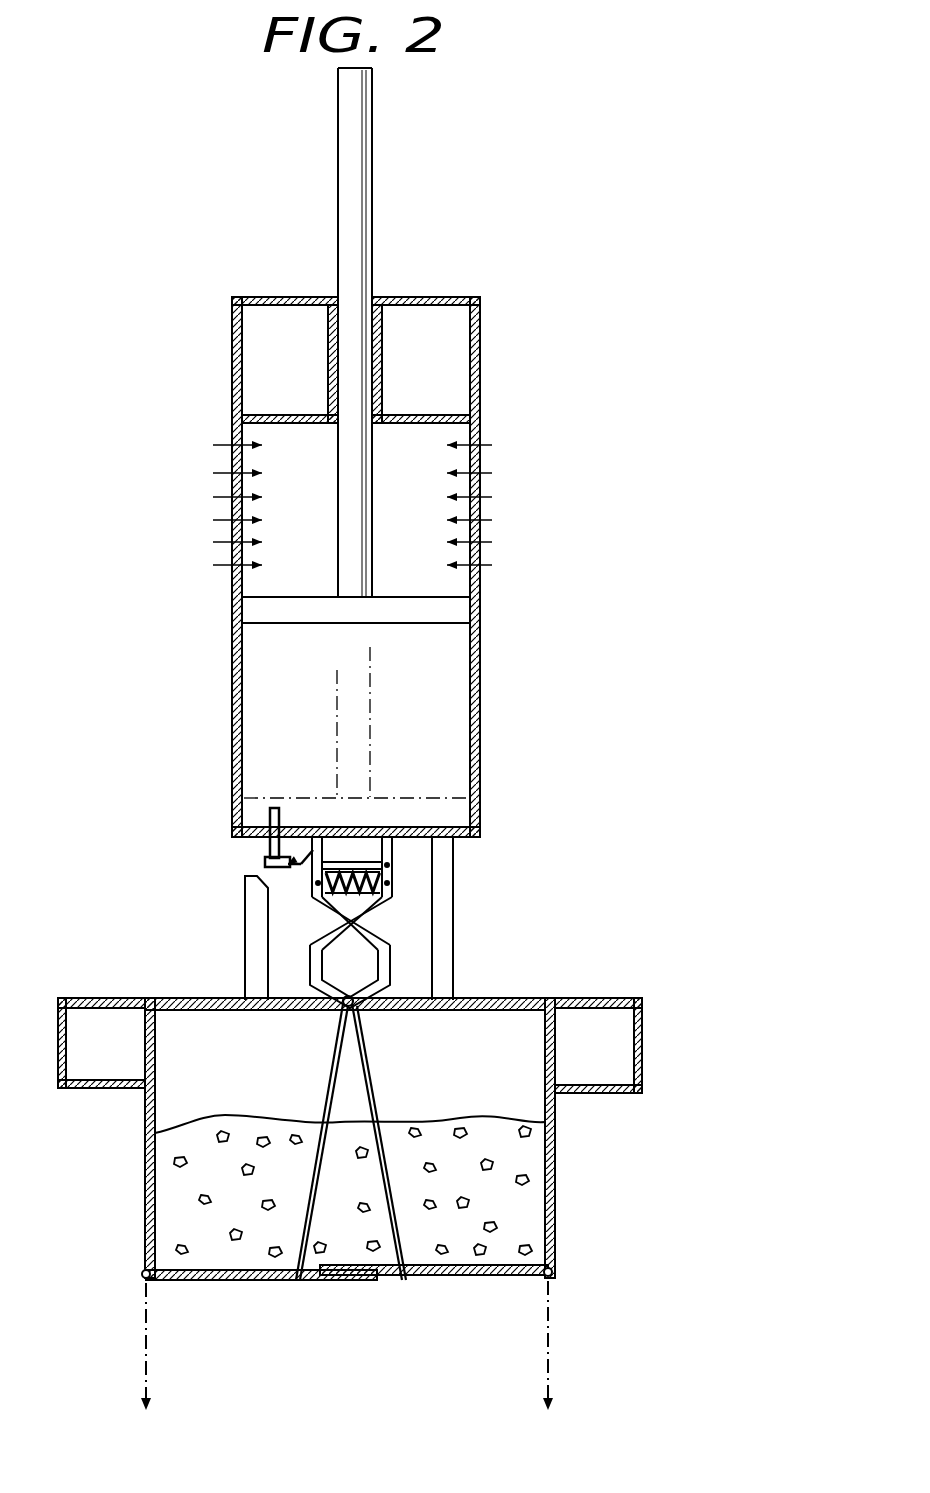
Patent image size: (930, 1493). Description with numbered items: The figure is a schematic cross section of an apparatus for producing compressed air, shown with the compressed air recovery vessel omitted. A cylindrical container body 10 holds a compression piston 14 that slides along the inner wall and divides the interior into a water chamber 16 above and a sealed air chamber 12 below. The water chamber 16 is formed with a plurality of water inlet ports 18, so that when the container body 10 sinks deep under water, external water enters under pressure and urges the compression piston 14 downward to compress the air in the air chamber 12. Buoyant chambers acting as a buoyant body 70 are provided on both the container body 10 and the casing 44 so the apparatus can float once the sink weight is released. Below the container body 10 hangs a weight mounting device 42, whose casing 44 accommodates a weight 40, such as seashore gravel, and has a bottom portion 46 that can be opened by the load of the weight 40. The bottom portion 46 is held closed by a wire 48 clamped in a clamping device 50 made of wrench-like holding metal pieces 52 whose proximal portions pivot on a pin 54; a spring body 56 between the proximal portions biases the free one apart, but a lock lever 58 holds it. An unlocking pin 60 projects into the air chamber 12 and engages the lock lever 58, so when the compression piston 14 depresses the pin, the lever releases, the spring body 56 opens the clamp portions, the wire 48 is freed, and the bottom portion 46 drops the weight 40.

The container body 10 is at (441, 298).
The buoyant body 70 is at (256, 343).
The water inlet ports 18 is at (234, 483).
The water chamber 16 is at (412, 531).
The compression piston 14 is at (283, 625).
The air chamber 12 is at (422, 731).
The unlocking pin 60 is at (296, 820).
The lock lever 58 is at (284, 876).
The clamping device 50 is at (398, 876).
The pin 54 is at (345, 928).
The spring body 56 is at (355, 905).
The wrench-like holding metal pieces 52 is at (395, 965).
The wire 48 is at (370, 1084).
The weight 40 is at (230, 1122).
The casing 44 is at (145, 1152).
The weight mounting device 42 is at (558, 1175).
The bottom portion 46 is at (250, 1282).